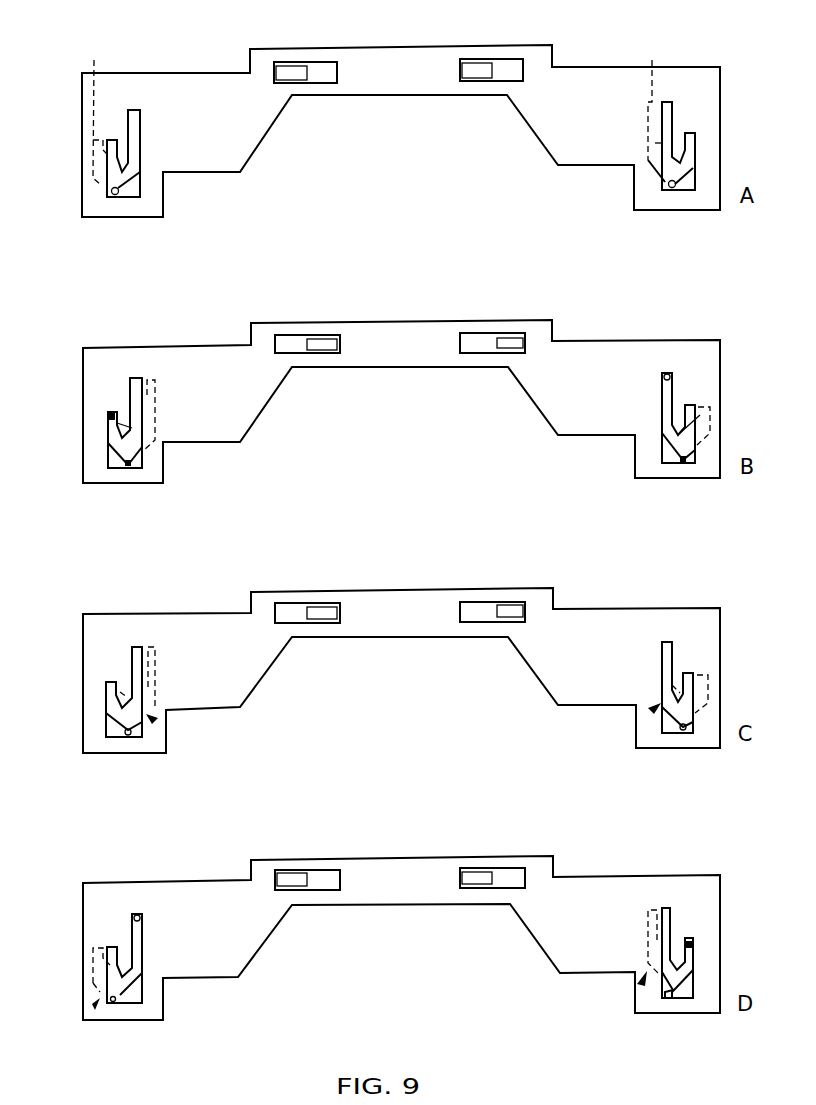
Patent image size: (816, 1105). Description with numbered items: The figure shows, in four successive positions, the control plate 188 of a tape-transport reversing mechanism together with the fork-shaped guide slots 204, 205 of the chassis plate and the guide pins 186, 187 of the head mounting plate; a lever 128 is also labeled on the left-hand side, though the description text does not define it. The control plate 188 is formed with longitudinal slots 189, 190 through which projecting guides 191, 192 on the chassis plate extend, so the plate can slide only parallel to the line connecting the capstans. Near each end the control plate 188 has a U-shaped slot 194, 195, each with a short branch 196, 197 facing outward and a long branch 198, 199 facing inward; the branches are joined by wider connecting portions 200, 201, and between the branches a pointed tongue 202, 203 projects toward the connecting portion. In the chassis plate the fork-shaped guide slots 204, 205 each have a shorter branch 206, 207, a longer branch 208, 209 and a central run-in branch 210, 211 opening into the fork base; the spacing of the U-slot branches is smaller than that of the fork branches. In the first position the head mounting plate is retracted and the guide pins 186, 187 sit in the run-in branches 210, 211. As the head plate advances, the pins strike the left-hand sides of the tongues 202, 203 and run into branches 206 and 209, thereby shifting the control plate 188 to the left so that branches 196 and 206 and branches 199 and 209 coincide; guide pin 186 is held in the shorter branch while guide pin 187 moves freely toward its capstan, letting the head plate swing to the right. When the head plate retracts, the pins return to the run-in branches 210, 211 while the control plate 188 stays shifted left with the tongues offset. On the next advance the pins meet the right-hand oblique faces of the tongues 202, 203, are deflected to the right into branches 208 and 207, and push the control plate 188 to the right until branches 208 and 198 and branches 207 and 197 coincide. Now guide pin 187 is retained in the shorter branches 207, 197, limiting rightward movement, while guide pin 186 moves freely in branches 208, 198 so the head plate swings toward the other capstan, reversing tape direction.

The lever 128 is at (137, 650).
The guide pin 186 is at (116, 196).
The guide pin 187 is at (673, 189).
The control plate 188 is at (584, 80).
The longitudinal slot 189 is at (325, 72).
The longitudinal slot 190 is at (510, 70).
The projecting guide 191 is at (290, 72).
The projecting guide 192 is at (478, 70).
The U-shaped slot 194 is at (152, 720).
The U-shaped slot 195 is at (654, 710).
The short branch 196 is at (108, 688).
The short branch 197 is at (690, 405).
The long branch 198 is at (135, 378).
The long branch 199 is at (665, 642).
The connecting portion 200 is at (113, 466).
The connecting portion 201 is at (670, 464).
The tongue 202 is at (132, 116).
The tongue 203 is at (688, 113).
The fork-shaped guide slot 204 is at (95, 1008).
The fork-shaped guide slot 205 is at (641, 984).
The shorter branch 206 is at (103, 110).
The shorter branch 207 is at (712, 407).
The longer branch 208 is at (158, 378).
The longer branch 209 is at (652, 109).
The run-in branch 210 is at (129, 467).
The run-in branch 211 is at (684, 463).